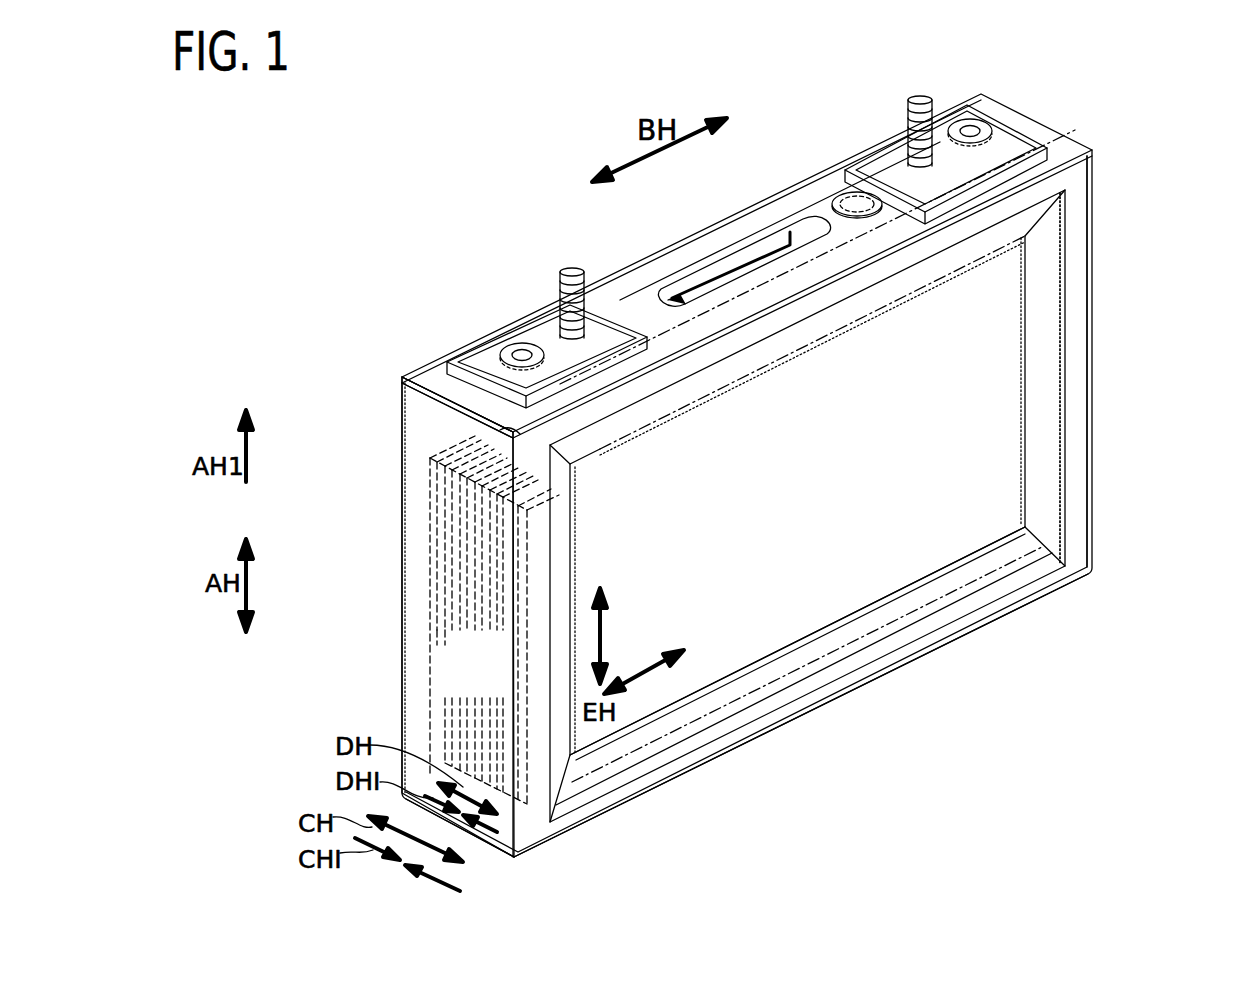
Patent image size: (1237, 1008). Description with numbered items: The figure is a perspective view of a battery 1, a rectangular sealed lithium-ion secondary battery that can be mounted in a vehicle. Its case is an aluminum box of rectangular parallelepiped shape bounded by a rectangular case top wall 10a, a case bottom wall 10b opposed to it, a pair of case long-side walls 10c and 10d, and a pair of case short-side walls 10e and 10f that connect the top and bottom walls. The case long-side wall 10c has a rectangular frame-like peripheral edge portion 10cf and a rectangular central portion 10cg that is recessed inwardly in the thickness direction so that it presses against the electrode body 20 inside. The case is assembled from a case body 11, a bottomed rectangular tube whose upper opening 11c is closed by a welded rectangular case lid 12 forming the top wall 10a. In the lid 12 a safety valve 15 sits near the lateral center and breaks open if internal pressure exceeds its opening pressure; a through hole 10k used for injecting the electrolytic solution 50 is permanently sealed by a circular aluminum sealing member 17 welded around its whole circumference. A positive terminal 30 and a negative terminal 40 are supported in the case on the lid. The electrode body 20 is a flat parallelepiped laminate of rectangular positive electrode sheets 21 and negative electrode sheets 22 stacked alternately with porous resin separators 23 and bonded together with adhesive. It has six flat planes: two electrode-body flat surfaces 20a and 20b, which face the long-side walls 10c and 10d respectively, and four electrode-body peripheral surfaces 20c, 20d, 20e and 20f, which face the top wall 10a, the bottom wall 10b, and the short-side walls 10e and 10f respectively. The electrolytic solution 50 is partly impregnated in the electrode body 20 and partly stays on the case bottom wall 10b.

The battery 1 is at (433, 273).
The case top wall 10a is at (626, 289).
The case bottom wall 10b is at (702, 786).
The case long-side wall 10c is at (1000, 385).
The peripheral edge portion 10cf is at (1018, 602).
The central portion 10cg is at (980, 515).
The case long-side wall 10d is at (392, 515).
The case short-side wall 10e is at (417, 623).
The case short-side wall 10f is at (1108, 328).
The through hole 10k is at (893, 146).
The case body 11 is at (1078, 270).
The opening 11c is at (440, 368).
The case lid 12 is at (862, 208).
The safety valve 15 is at (706, 278).
The sealing member 17 is at (840, 195).
The electrode body 20 is at (863, 585).
The electrode-body flat surface 20a is at (770, 620).
The electrode-body flat surface 20b is at (428, 578).
The electrode-body peripheral surface 20c is at (975, 226).
The electrode-body peripheral surface 20d is at (612, 762).
The electrode-body peripheral surface 20e is at (458, 677).
The electrode-body peripheral surface 20f is at (1075, 416).
The positive electrode sheet 21 is at (805, 612).
The negative electrode sheet 22 is at (835, 598).
The separator 23 is at (888, 572).
The positive terminal 30 is at (572, 272).
The negative terminal 40 is at (975, 124).
The electrolytic solution 50 is at (904, 556).